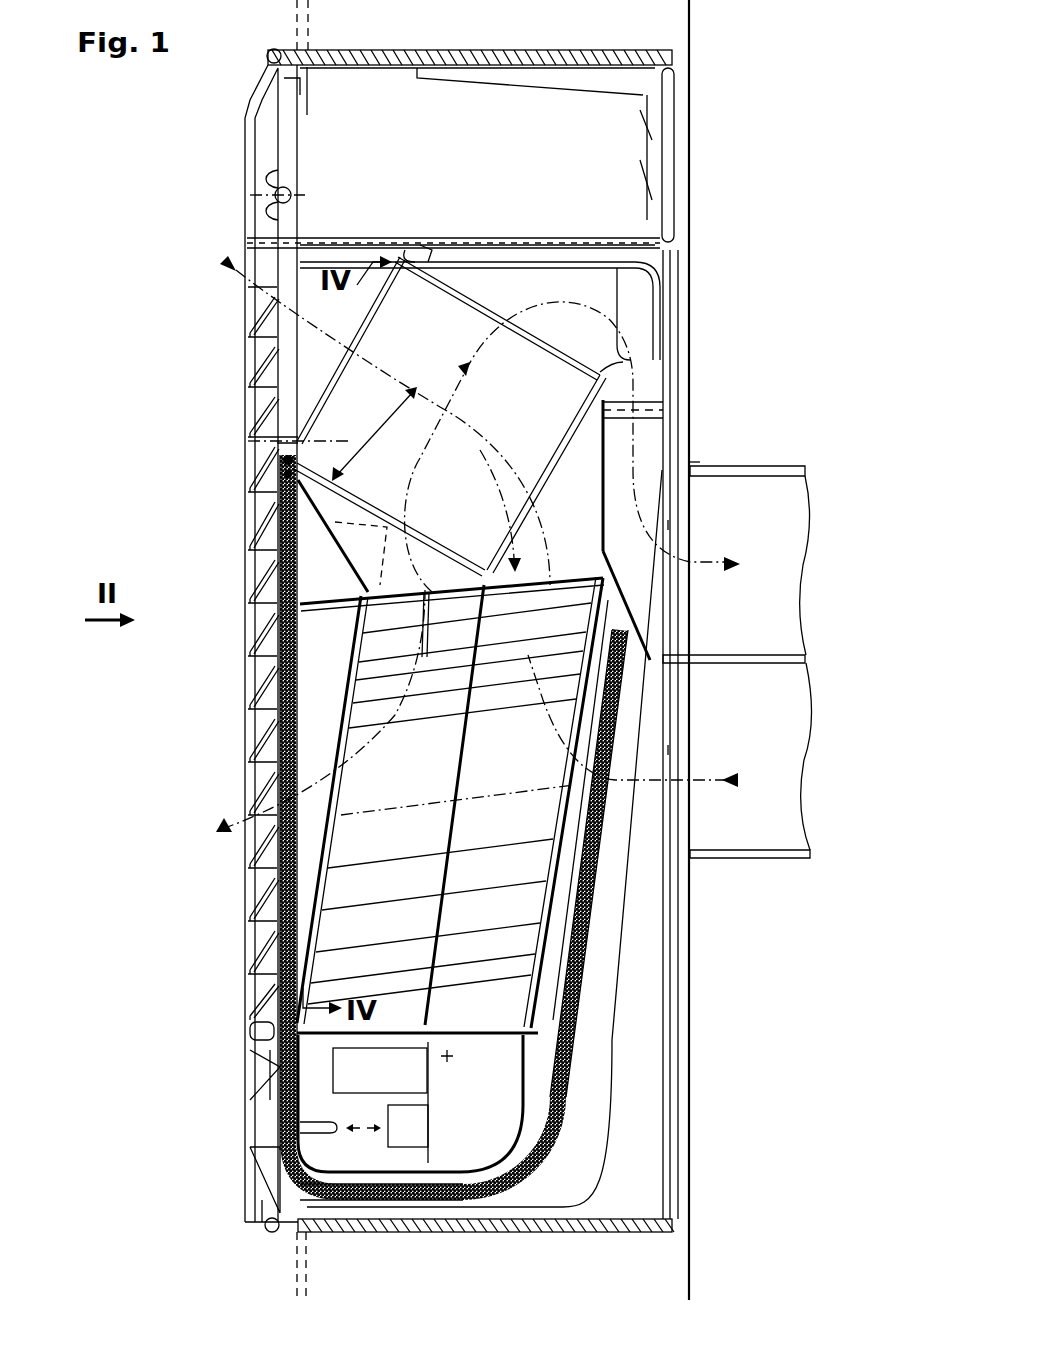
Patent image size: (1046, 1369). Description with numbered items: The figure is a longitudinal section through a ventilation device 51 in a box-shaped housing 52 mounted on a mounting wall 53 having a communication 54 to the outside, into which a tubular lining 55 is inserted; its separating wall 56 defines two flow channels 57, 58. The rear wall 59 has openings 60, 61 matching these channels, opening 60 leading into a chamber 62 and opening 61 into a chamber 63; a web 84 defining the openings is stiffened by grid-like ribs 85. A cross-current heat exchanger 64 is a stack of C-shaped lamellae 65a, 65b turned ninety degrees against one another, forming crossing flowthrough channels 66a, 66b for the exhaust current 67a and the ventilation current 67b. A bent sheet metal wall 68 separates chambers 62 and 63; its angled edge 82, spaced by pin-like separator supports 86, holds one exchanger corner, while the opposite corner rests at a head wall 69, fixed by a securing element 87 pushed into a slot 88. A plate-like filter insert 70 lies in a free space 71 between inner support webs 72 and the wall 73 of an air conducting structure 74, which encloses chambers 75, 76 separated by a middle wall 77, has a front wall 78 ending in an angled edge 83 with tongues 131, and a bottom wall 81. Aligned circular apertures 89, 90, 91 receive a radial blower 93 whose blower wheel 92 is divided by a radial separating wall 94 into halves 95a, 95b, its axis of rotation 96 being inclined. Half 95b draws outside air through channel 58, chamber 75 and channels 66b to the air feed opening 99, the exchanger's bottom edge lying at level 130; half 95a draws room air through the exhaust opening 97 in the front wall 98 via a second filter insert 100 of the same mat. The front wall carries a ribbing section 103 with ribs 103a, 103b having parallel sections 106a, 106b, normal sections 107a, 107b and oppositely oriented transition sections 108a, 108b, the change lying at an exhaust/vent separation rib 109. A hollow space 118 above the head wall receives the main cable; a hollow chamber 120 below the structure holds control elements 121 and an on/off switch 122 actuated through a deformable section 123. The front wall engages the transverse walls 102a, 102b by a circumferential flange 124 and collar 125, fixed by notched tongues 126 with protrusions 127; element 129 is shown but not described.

The ventilation device 51 is at (192, 450).
The box-shaped housing 52 is at (322, 1243).
The mounting wall 53 is at (691, 27).
The communication 54 is at (728, 460).
The tubular lining 55 is at (806, 468).
The separating wall 56 is at (808, 661).
The flow channel 57 is at (802, 556).
The flow channel 58 is at (805, 820).
The rear wall 59 is at (670, 1000).
The opening 60 is at (686, 537).
The opening 61 is at (682, 714).
The chamber 62 is at (655, 445).
The chamber 63 is at (600, 973).
The heat exchanger 64 is at (472, 475).
The individual lamella 65a is at (360, 340).
The individual lamella 65b is at (467, 302).
The flowthrough channel 66a is at (566, 408).
The flowthrough channel 66b is at (374, 434).
The exhaust media current 67a is at (713, 562).
The ventilation media current 67b is at (228, 263).
The sheet metal wall 68 is at (680, 601).
The head wall 69 is at (425, 242).
The plate-like filter insert 70 is at (630, 812).
The free space 71 is at (604, 951).
The inner support webs 72 is at (617, 1029).
The rear wall of air conducting structure 73 is at (600, 590).
The air conducting structure 74 is at (300, 604).
The chamber 75 is at (508, 540).
The chamber 76 is at (347, 513).
The middle wall 77 is at (482, 570).
The front wall of air conducting structure 78 is at (297, 590).
The wall 81 is at (274, 1040).
The angled edge 82 is at (655, 378).
The angled edge 83 is at (282, 487).
The web 84 is at (659, 659).
The ribs 85 is at (668, 523).
The pin-like separator supports 86 is at (655, 404).
The securing element 87 is at (388, 260).
The slot 88 is at (410, 250).
The circular aperture 89 is at (682, 874).
The circular aperture 90 is at (290, 718).
The circular aperture 91 is at (482, 603).
The blower wheel 92 is at (375, 660).
The radial blower 93 is at (335, 698).
The radial separating wall 94 is at (345, 840).
The blower wheel half 95a is at (290, 872).
The blower wheel half 95b is at (607, 938).
The axis of rotation 96 is at (595, 850).
The exhaust air opening 97 is at (232, 635).
The front wall 98 is at (243, 151).
The air feed opening 99 is at (233, 332).
The plate-shaped filter insert 100 is at (300, 700).
The transverse wall 102a is at (468, 44).
The transverse wall 102b is at (577, 1232).
The ribbing section 103 is at (232, 465).
The rib 103a is at (270, 765).
The rib 103b is at (236, 355).
The profile section parallel to main plane 106a is at (243, 548).
The profile section parallel to main plane 106b is at (240, 290).
The profile section normal to main plane 107a is at (243, 568).
The profile section normal to main plane 107b is at (245, 380).
The transition section 108a is at (243, 522).
The transition section 108b is at (237, 317).
The exhaust/vent separation rib 109 is at (247, 440).
The hollow space 118 is at (371, 108).
The hollow chamber 120 is at (463, 1140).
The control and switching element 121 is at (400, 1148).
The on/off switch 122 is at (403, 1077).
The elastically deformable section 123 is at (270, 1100).
The circumferential flange 124 is at (302, 90).
The collar 125 is at (270, 49).
The notched out tongues 126 is at (262, 195).
The protrusion 127 is at (292, 195).
The duct corner 129 is at (645, 340).
The level 130 is at (325, 438).
The projecting tongues or teeth 131 is at (240, 503).